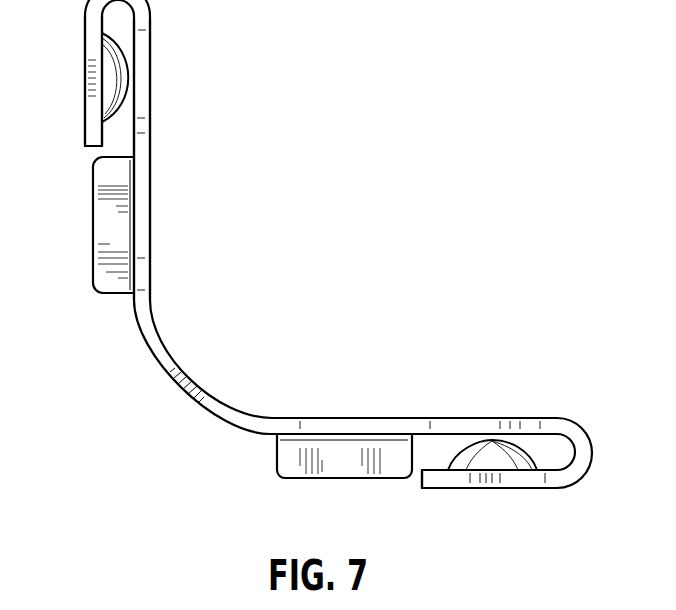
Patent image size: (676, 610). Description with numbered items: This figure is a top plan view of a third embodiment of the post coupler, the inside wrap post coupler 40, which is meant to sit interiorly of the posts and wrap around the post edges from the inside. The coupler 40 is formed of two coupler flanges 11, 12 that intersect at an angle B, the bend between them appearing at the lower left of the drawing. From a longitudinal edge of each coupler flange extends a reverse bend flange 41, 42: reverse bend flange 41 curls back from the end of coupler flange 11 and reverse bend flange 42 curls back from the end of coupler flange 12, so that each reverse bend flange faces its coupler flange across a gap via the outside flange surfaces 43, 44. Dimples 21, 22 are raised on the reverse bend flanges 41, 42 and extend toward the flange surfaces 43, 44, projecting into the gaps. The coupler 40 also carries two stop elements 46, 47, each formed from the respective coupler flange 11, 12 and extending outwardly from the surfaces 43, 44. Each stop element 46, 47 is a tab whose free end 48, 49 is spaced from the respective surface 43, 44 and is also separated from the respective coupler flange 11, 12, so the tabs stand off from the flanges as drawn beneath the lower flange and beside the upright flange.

The inside wrap post coupler 40 is at (397, 168).
The coupler flange 11 is at (438, 425).
The coupler flange 12 is at (146, 125).
The dimple 21 is at (492, 447).
The dimple 22 is at (127, 79).
The reverse bend flange 41 is at (459, 479).
The reverse bend flange 42 is at (90, 108).
The outside flange surface 43 is at (386, 441).
The outside flange surface 44 is at (133, 184).
The stop element 46 is at (344, 471).
The stop element 47 is at (98, 229).
The free end 48 is at (301, 478).
The free end 49 is at (93, 268).
The angle B is at (180, 391).